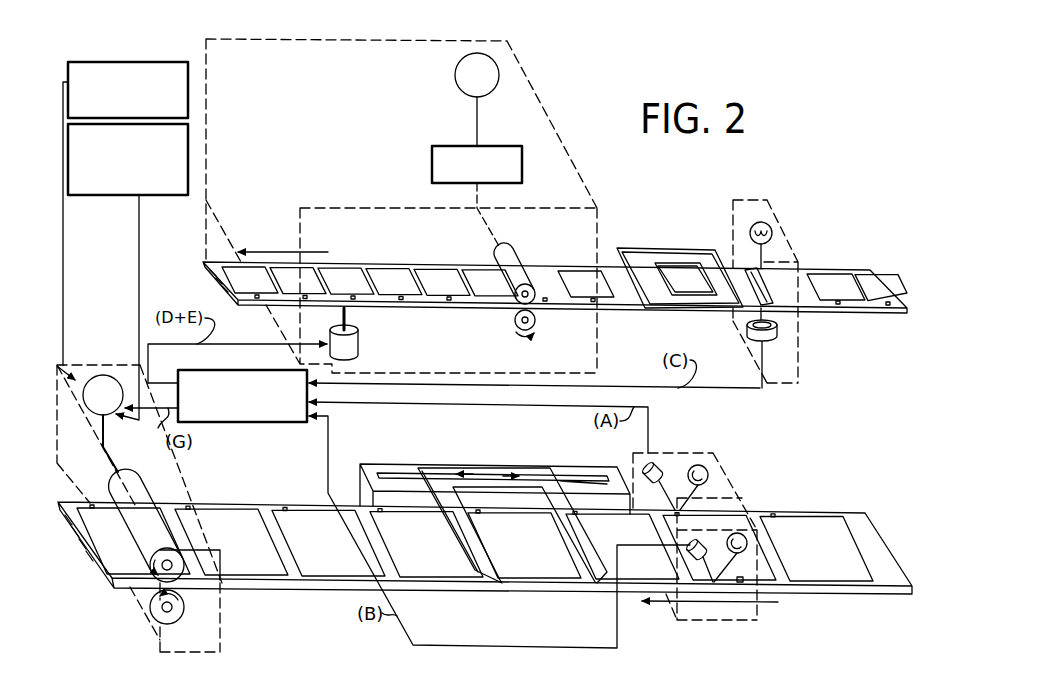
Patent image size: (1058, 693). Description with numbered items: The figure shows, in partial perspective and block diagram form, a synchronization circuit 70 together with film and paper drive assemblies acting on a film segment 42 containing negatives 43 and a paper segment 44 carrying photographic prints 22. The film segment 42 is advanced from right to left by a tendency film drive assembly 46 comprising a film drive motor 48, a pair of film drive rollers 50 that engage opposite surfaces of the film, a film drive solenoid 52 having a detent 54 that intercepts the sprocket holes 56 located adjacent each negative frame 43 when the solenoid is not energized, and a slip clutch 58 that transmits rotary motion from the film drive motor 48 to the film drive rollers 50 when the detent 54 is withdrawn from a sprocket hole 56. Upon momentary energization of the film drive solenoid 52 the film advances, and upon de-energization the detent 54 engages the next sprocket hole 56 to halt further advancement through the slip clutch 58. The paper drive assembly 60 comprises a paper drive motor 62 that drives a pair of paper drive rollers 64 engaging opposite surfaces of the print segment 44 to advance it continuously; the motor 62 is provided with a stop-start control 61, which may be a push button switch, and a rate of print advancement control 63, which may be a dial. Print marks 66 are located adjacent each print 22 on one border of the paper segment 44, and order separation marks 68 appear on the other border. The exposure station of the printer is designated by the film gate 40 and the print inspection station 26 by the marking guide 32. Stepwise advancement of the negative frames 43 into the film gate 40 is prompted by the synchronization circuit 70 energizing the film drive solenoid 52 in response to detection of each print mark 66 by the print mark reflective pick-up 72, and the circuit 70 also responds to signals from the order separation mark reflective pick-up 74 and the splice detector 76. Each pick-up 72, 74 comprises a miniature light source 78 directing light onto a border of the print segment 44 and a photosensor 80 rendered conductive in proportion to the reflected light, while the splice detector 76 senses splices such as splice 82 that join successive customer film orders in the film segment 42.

The photographic print 22 is at (485, 548).
The print inspection station 26 is at (433, 463).
The marking guide 32 is at (587, 547).
The film gate 40 is at (660, 222).
The film segment 42 is at (541, 268).
The negative 43 is at (393, 272).
The photographic print segment 44 is at (845, 508).
The tendency film drive assembly 46 is at (542, 98).
The film drive motor 48 is at (491, 63).
The film drive rollers 50 is at (535, 320).
The film drive solenoid 52 is at (356, 349).
The detent 54 is at (349, 316).
The sprocket holes 56 is at (450, 297).
The slip clutch 58 is at (527, 128).
The paper drive assembly 60 is at (96, 334).
The stop-start control 61 is at (139, 58).
The paper drive motor 62 is at (113, 380).
The rate of print advancement control 63 is at (185, 198).
The paper drive rollers 64 is at (185, 566).
The print marks 66 is at (773, 510).
The order separation marks 68 is at (740, 583).
The synchronization circuit 70 is at (283, 424).
The print mark reflective pick-up 72 is at (723, 462).
The order separation mark reflective pick-up 74 is at (757, 592).
The splice detector 76 is at (774, 205).
The light source 78 is at (748, 548).
The photosensor 80 is at (698, 560).
The splice 82 is at (763, 288).